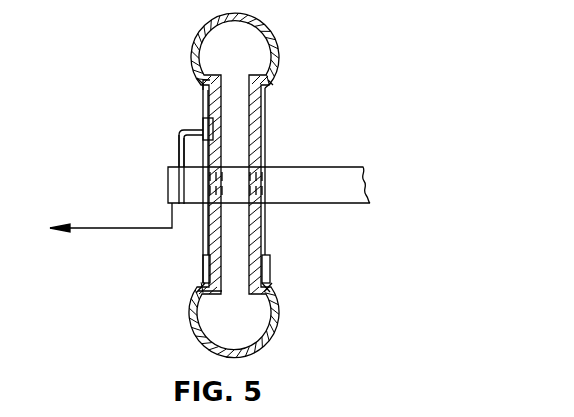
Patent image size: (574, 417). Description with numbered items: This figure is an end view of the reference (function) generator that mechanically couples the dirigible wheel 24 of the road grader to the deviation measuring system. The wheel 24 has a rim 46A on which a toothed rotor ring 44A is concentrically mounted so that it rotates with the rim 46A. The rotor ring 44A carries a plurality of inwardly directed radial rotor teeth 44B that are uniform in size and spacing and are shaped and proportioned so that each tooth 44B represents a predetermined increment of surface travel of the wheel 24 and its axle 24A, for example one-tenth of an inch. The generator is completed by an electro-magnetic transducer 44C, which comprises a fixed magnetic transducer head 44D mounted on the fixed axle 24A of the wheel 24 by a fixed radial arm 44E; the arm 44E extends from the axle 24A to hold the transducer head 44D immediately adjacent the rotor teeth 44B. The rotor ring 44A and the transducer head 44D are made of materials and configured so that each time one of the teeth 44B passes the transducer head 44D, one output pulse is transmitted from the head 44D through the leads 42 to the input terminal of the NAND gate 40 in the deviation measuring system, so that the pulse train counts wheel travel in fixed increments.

The dirigible wheel 24 is at (248, 55).
The axle 24A is at (305, 193).
The NAND gate 40 is at (58, 230).
The leads 42 is at (142, 229).
The toothed rotor ring 44A is at (207, 97).
The rotor teeth 44B is at (205, 121).
The electro-magnetic transducer 44C is at (166, 155).
The transducer head 44D is at (196, 129).
The radial arm 44E is at (168, 176).
The rim 46A is at (203, 84).